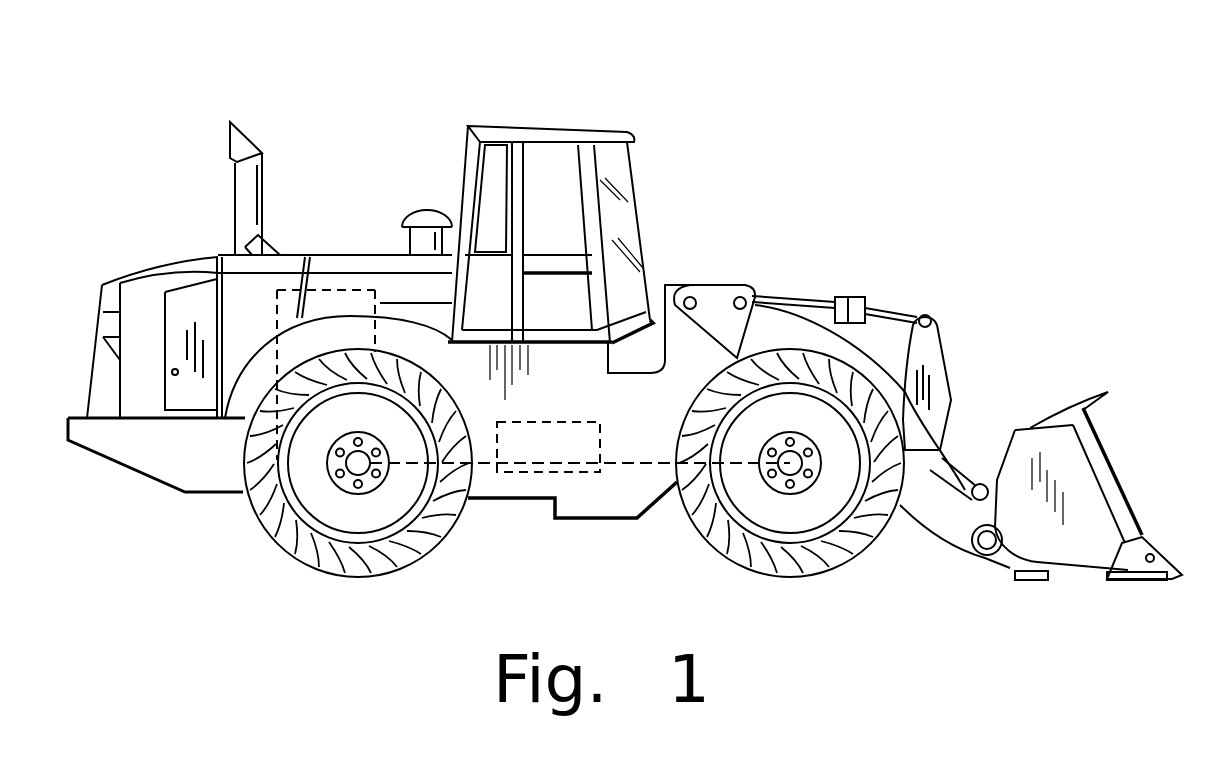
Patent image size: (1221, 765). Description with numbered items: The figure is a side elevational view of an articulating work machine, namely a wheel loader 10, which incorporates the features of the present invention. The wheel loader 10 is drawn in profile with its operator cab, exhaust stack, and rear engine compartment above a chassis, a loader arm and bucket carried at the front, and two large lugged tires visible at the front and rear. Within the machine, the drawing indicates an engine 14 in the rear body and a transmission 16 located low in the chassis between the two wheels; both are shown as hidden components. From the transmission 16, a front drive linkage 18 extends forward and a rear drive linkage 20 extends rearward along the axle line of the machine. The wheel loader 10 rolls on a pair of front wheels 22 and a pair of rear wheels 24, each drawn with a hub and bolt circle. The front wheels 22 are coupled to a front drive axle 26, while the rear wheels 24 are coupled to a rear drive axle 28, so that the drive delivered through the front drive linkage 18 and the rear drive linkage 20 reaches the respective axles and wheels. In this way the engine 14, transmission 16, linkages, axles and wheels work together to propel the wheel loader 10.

The wheel loader 10 is at (868, 116).
The engine 14 is at (343, 288).
The transmission 16 is at (548, 474).
The front drive linkage 18 is at (640, 465).
The rear drive linkage 20 is at (410, 465).
The front wheels 22 is at (798, 563).
The rear wheels 24 is at (325, 555).
The front drive axle 26 is at (792, 468).
The rear drive axle 28 is at (352, 472).